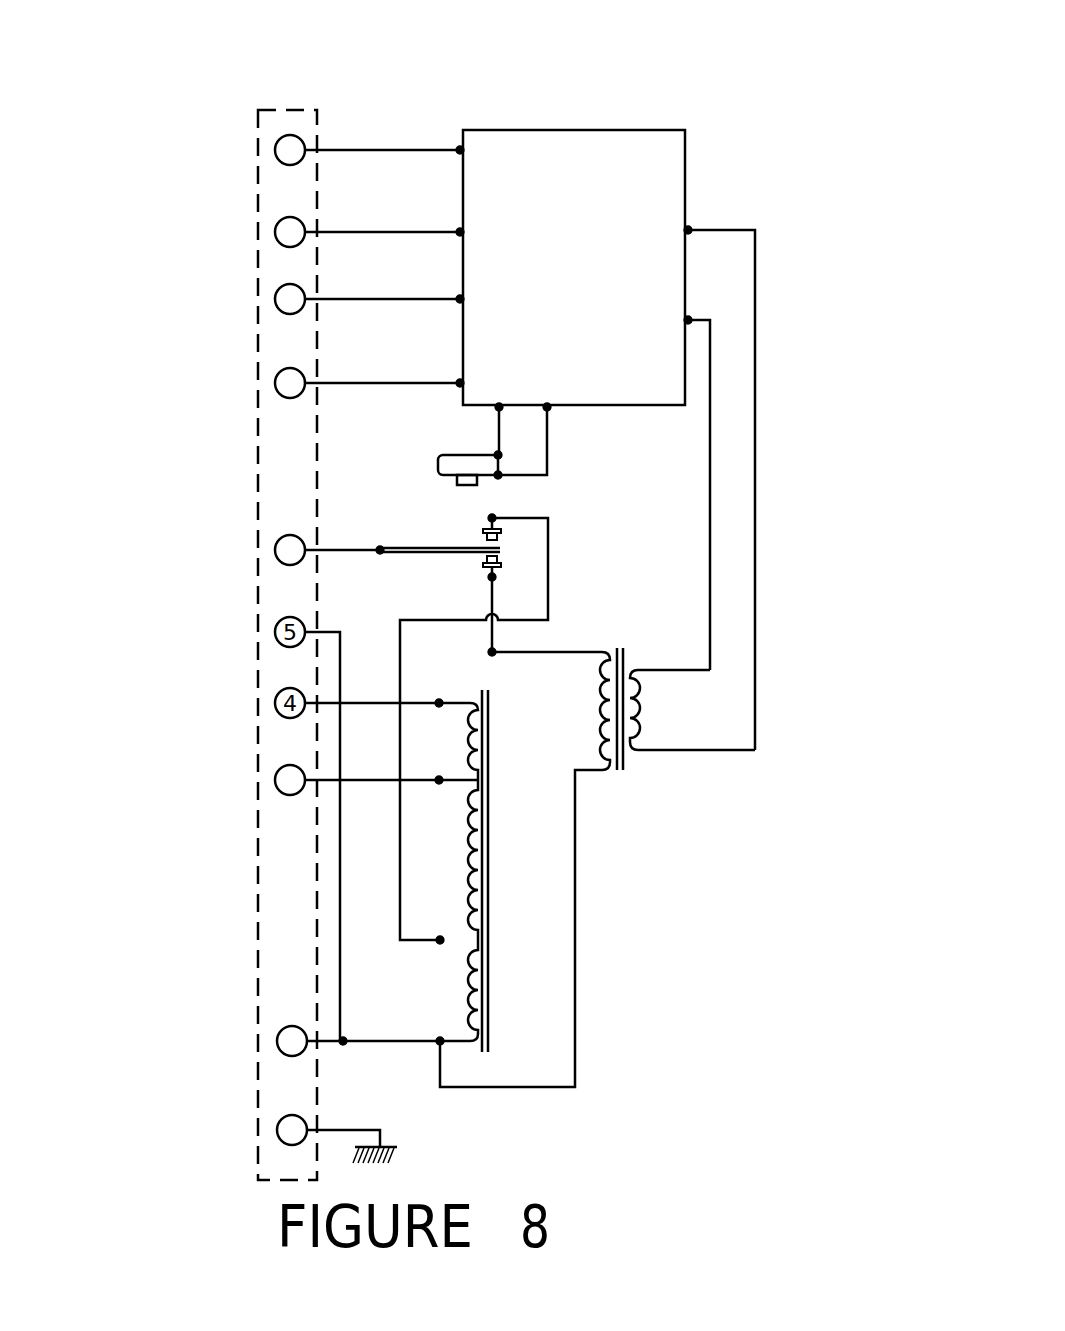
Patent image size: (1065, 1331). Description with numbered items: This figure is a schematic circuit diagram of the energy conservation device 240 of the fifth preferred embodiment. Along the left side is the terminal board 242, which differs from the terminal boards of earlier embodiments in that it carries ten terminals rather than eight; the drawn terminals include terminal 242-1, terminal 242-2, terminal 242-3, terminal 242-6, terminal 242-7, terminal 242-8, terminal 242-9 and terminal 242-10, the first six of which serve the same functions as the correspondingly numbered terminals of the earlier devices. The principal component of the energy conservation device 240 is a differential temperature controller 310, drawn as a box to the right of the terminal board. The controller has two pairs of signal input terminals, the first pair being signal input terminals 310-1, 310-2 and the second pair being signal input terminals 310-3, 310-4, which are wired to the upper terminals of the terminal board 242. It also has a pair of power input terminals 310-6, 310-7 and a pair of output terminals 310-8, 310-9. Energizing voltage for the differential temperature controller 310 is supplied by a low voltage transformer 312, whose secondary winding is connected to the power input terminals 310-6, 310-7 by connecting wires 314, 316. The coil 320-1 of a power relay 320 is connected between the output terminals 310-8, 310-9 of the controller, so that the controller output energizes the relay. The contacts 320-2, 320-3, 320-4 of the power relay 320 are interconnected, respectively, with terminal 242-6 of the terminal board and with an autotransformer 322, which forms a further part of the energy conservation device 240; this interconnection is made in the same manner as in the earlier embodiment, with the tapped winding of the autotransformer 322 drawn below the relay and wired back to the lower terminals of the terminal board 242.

The energy conservation device 240 is at (648, 1125).
The terminal board 242 is at (293, 120).
The terminal 242-1 is at (277, 1130).
The terminal 242-2 is at (277, 1041).
The terminal 242-3 is at (275, 780).
The terminal 242-6 is at (275, 550).
The terminal 242-7 is at (275, 383).
The terminal 242-8 is at (275, 299).
The terminal 242-9 is at (275, 232).
The terminal 242-10 is at (275, 150).
The differential temperature controller 310 is at (563, 137).
The signal input terminal 310-1 is at (460, 146).
The signal input terminal 310-2 is at (460, 229).
The signal input terminal 310-3 is at (460, 296).
The signal input terminal 310-4 is at (460, 380).
The power input terminal 310-6 is at (690, 228).
The power input terminal 310-7 is at (690, 318).
The output terminal 310-8 is at (499, 409).
The output terminal 310-9 is at (547, 409).
The low voltage transformer 312 is at (632, 792).
The connecting wire 314 is at (710, 537).
The connecting wire 316 is at (755, 521).
The power relay 320 is at (496, 697).
The coil 320-1 is at (447, 476).
The contact 320-2 is at (470, 558).
The contact 320-3 is at (492, 518).
The contact 320-4 is at (500, 563).
The autotransformer 322 is at (502, 895).